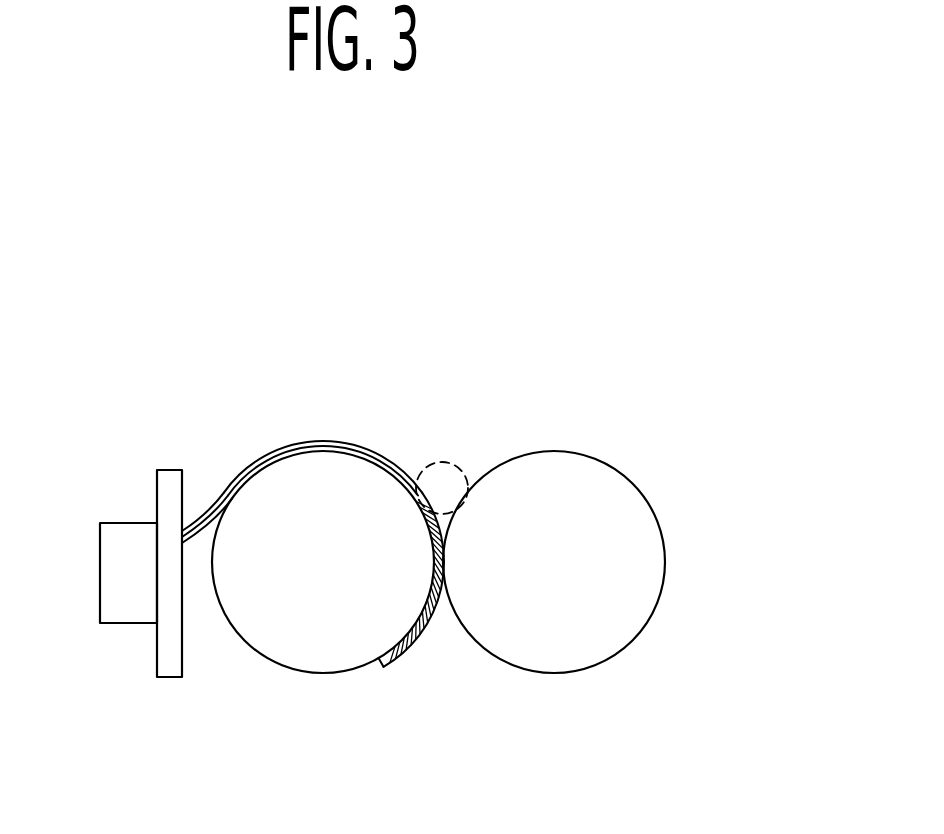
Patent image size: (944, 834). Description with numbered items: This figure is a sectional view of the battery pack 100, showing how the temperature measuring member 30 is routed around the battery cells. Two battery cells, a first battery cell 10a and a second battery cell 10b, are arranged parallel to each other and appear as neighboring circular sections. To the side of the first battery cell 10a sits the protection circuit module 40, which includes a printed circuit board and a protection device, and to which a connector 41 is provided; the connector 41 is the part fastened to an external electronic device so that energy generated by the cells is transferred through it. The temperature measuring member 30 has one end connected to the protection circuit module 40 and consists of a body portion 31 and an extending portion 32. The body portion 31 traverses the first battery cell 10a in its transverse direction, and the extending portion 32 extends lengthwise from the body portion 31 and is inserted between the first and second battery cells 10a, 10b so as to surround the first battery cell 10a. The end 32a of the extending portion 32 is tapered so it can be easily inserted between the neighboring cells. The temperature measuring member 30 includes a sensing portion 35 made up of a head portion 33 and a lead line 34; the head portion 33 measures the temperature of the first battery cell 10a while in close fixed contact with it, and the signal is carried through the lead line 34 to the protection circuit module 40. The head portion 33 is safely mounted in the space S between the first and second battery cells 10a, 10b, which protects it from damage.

The battery pack 100 is at (647, 321).
The first battery cell 10a is at (312, 650).
The second battery cell 10b is at (565, 657).
The temperature measuring member 30 is at (477, 372).
The body portion 31 is at (384, 452).
The extending portion 32 is at (421, 658).
The end of the extending portion 32a is at (373, 666).
The head portion 33 is at (417, 498).
The lead line 34 is at (333, 442).
The sensing portion 35 is at (398, 327).
The protection circuit module 40 is at (168, 470).
The connector 41 is at (118, 522).
The space S is at (458, 476).